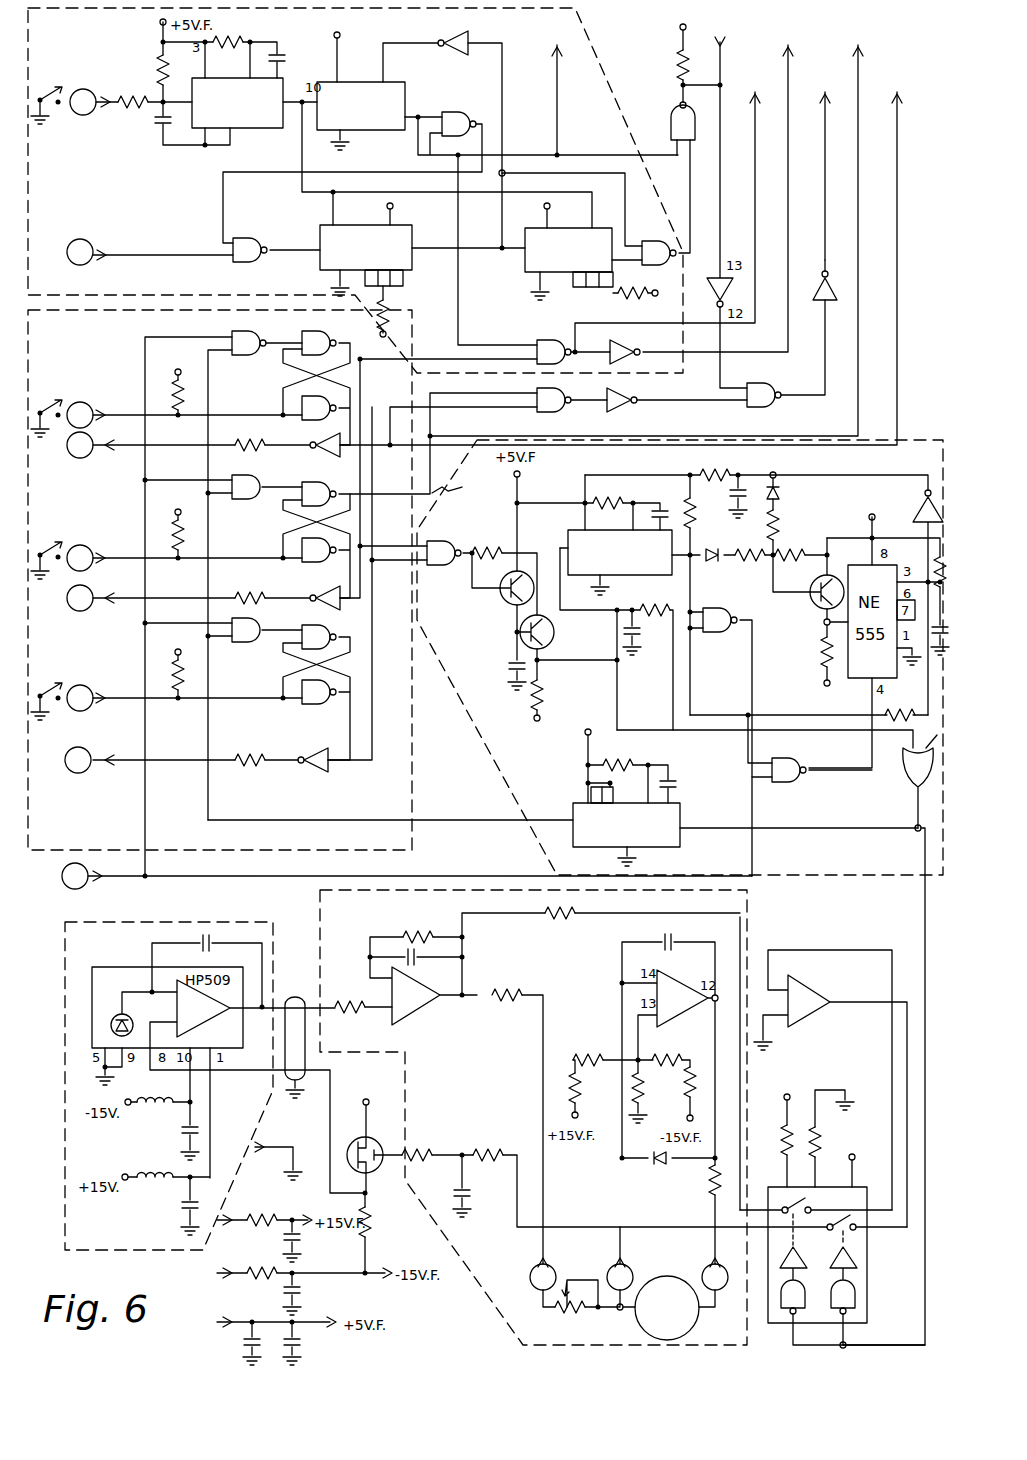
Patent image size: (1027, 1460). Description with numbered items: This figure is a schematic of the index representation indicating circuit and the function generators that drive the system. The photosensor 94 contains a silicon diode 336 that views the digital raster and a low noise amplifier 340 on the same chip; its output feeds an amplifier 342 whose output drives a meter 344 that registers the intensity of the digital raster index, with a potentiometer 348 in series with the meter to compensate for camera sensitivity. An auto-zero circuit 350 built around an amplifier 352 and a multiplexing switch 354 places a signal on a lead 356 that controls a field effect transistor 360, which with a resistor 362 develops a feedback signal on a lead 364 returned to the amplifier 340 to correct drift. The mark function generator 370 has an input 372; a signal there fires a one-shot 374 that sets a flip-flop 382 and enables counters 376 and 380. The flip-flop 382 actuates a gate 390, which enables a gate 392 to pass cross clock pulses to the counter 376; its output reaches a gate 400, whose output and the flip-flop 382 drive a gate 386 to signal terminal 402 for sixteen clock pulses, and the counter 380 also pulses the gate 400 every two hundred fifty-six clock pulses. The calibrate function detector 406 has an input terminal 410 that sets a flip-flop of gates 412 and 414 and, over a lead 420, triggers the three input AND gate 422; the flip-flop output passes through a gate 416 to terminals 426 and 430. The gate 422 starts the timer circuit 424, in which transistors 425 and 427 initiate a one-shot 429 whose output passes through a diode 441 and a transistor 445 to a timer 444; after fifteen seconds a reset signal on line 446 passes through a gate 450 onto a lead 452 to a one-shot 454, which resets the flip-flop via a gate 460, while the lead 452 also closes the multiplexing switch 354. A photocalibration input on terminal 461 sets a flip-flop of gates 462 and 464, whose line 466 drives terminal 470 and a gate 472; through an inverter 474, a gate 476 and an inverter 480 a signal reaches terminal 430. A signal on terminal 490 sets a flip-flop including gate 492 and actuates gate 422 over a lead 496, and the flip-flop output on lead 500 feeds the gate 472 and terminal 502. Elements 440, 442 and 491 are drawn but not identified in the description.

The photosensor 94 is at (112, 943).
The silicon diode 336 is at (120, 1014).
The low noise amplifier 340 is at (228, 1014).
The amplifier 342 is at (406, 1020).
The meter 344 is at (662, 1276).
The potentiometer 348 is at (577, 1313).
The auto-zero circuit 350 is at (858, 1078).
The amplifier 352 is at (807, 1022).
The multiplexing switch 354 is at (867, 1296).
The lead 356 is at (566, 1226).
The field effect transistor 360 is at (387, 1140).
The resistor 362 is at (374, 1224).
The lead 364 is at (294, 1088).
The mark function generator 370 is at (601, 67).
The input terminal 372 is at (58, 84).
The one-shot 374 is at (256, 138).
The counter 376 is at (320, 224).
The counter 380 is at (522, 264).
The flip-flop 382 is at (408, 90).
The gate 386 is at (669, 108).
The gate 390 is at (452, 110).
The gate 392 is at (251, 228).
The gate 400 is at (662, 240).
The terminal 402 is at (725, 72).
The calibrate function detector 406 is at (264, 402).
The input terminal 410 is at (106, 412).
The gate 412 is at (304, 334).
The gate 414 is at (234, 418).
The gate 416 is at (557, 340).
The lead 420 is at (281, 572).
The three input AND gate 422 is at (441, 542).
The timer circuit 424 is at (490, 754).
The transistor 425 is at (499, 611).
The terminal 426 is at (758, 158).
The transistor 427 is at (556, 636).
The one-shot 429 is at (623, 580).
The terminal 430 is at (825, 155).
The resistor network 440 is at (745, 560).
The diode 441 is at (736, 534).
The NAND gate 442 is at (789, 794).
The timer 444 is at (856, 684).
The transistor 445 is at (811, 622).
The line 446 is at (912, 692).
The gate 450 is at (906, 784).
The lead 452 is at (842, 828).
The one-shot 454 is at (690, 811).
The gate 460 is at (262, 334).
The terminal 461 is at (72, 542).
The gate 462 is at (341, 482).
The gate 464 is at (341, 528).
The line 466 is at (464, 485).
The terminal 470 is at (858, 194).
The gate 472 is at (552, 414).
The inverter 474 is at (630, 416).
The gate 476 is at (768, 386).
The inverter 480 is at (828, 272).
The terminal 490 is at (80, 694).
The inverter 491 is at (356, 710).
The gate 492 is at (341, 619).
The lead 496 is at (413, 696).
The lead 500 is at (374, 639).
The terminal 502 is at (900, 153).